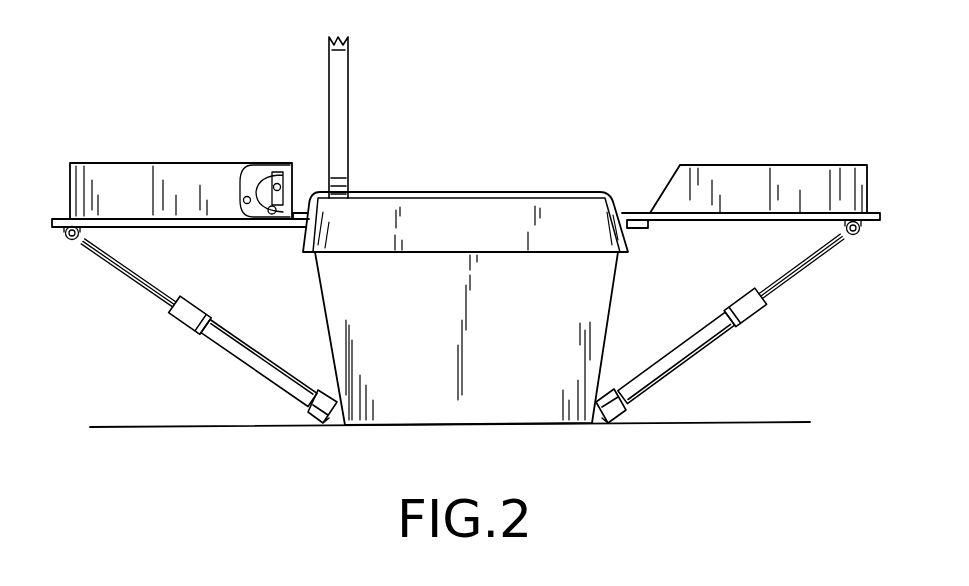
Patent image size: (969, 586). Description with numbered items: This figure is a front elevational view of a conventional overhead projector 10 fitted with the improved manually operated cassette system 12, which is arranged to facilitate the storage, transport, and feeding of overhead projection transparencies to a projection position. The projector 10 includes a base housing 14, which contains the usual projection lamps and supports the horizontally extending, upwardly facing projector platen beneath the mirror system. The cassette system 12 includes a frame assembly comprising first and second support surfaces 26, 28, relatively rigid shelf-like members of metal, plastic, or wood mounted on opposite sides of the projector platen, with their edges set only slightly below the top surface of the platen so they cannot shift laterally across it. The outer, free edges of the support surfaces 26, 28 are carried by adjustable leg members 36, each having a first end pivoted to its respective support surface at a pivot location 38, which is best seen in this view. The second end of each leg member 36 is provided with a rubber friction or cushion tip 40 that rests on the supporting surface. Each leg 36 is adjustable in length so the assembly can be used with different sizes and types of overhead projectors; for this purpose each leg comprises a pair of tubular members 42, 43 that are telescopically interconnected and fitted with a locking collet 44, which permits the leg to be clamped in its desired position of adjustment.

The overhead projector 10 is at (493, 171).
The manually operated cassette system 12 is at (278, 147).
The base housing 14 is at (418, 403).
The first support surface 26 is at (187, 222).
The second support surface 28 is at (808, 222).
The adjustable leg member 36 is at (458, 339).
The pivot location 38 is at (70, 241).
The rubber friction or cushion tip 40 is at (312, 414).
The tubular member 42 is at (237, 327).
The tubular member 43 is at (157, 298).
The locking collet 44 is at (196, 297).